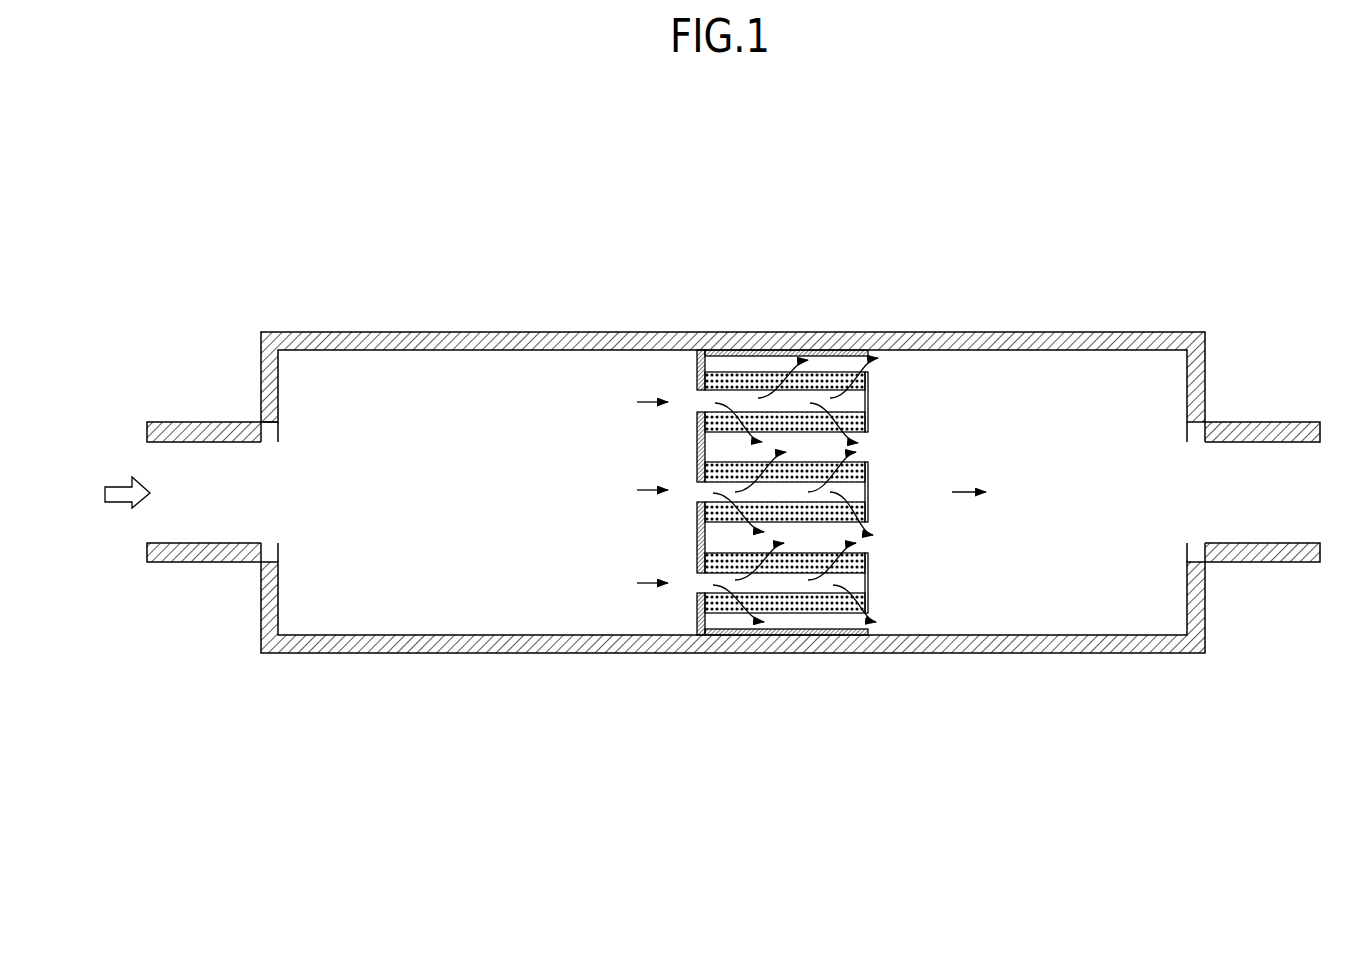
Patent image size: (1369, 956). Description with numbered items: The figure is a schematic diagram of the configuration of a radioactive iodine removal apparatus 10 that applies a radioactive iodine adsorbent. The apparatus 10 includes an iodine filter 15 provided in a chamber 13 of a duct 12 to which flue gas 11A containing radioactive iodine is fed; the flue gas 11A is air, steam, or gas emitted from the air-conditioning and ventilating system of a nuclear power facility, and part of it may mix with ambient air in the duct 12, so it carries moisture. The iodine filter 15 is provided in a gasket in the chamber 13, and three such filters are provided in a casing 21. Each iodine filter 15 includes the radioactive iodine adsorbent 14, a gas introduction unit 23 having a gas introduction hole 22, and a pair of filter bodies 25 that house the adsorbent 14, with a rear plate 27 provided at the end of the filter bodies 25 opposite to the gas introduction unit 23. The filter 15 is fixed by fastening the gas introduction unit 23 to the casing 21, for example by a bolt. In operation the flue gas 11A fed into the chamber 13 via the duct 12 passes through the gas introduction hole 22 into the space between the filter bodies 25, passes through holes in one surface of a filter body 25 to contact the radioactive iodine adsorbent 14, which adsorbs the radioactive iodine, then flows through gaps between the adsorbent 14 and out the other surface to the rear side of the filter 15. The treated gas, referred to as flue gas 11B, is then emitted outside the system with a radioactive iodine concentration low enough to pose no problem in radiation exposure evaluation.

The radioactive iodine removal apparatus 10 is at (616, 185).
The flue gas 11A is at (648, 400).
The flue gas 11B is at (965, 490).
The duct 12 is at (207, 422).
The chamber 13 is at (537, 332).
The radioactive iodine adsorbent 14 is at (746, 380).
The iodine filter 15 is at (632, 231).
The casing 21 is at (735, 636).
The gas introduction hole 22 is at (697, 590).
The gas introduction unit 23 is at (695, 365).
The filter body 25 is at (833, 355).
The rear plate 27 is at (868, 592).